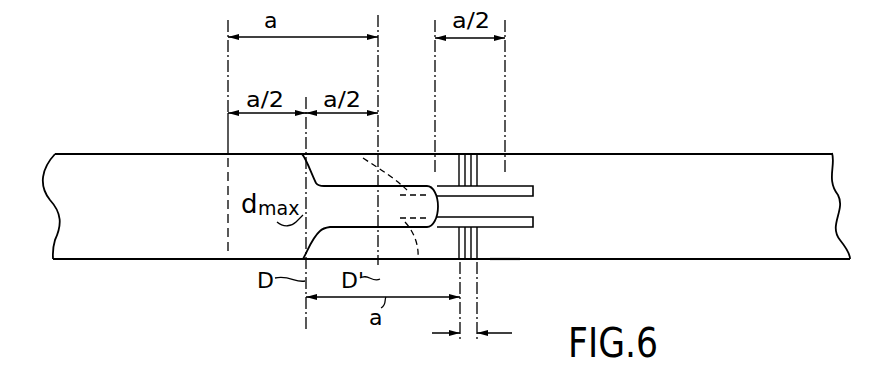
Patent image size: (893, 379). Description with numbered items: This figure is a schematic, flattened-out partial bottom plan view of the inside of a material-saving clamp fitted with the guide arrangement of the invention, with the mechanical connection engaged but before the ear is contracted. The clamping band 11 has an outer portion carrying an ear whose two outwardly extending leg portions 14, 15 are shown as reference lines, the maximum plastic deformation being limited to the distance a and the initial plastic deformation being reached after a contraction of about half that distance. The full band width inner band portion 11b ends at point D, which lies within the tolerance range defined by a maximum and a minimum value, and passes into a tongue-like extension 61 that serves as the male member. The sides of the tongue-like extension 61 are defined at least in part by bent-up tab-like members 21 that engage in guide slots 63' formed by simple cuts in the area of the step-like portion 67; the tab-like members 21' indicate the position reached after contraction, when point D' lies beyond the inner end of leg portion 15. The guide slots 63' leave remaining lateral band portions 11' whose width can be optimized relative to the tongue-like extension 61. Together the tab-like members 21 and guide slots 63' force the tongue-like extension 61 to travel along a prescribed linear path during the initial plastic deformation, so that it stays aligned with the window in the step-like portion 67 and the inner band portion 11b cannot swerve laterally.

The clamping band 11 is at (446, 188).
The inner band portion 11b is at (150, 248).
The lateral band portions 11' is at (458, 204).
The leg portion 14 is at (227, 141).
The leg portion 15 is at (380, 133).
The tab-like members 21 is at (389, 175).
The tab-like members 21' is at (395, 225).
The tongue-like extension 61 is at (390, 203).
The guide slots 63' is at (524, 202).
The step-like portion 67 is at (502, 260).